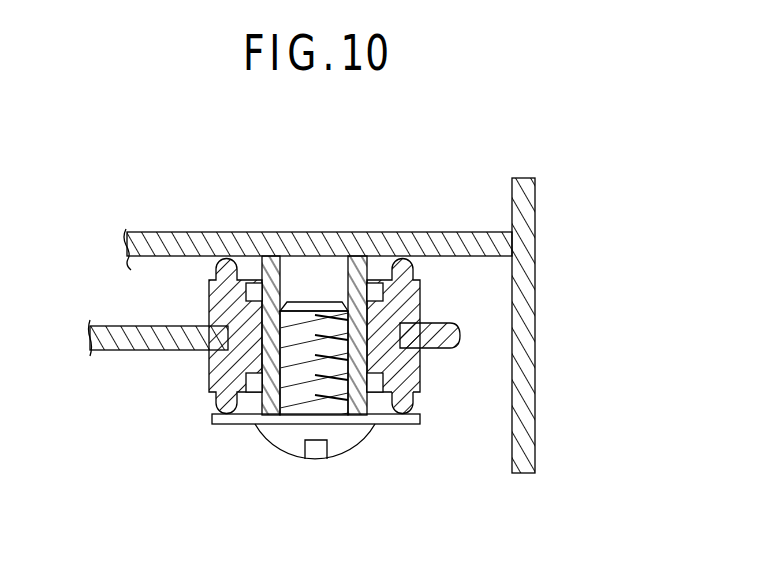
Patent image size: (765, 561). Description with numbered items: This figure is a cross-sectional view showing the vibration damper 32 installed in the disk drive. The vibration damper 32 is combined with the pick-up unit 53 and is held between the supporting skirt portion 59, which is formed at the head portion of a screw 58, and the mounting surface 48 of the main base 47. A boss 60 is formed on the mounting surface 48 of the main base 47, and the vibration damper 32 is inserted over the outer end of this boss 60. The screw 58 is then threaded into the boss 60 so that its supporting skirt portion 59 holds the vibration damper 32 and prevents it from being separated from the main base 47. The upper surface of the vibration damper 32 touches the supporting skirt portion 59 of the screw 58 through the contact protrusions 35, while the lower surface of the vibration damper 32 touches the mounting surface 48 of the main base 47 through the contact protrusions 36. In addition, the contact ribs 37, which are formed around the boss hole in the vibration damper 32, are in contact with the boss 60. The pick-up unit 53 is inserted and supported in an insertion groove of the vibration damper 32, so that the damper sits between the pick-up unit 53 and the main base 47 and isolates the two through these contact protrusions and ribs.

The vibration damper 32 is at (309, 370).
The contact protrusions 35 is at (414, 403).
The contact protrusions 36 is at (405, 259).
The contact ribs 37 is at (211, 359).
The main base 47 is at (535, 374).
The mounting surface 48 is at (167, 257).
The pick-up unit 53 is at (123, 350).
The screw 58 is at (342, 458).
The supporting skirt portion 59 is at (233, 425).
The boss 60 is at (364, 387).